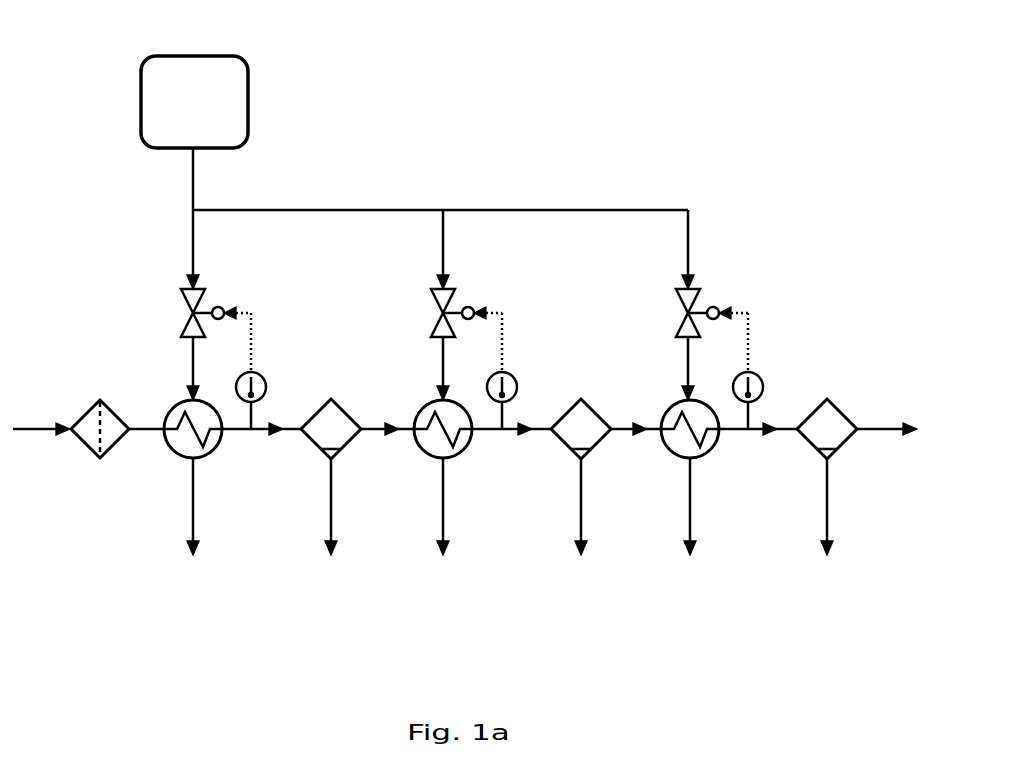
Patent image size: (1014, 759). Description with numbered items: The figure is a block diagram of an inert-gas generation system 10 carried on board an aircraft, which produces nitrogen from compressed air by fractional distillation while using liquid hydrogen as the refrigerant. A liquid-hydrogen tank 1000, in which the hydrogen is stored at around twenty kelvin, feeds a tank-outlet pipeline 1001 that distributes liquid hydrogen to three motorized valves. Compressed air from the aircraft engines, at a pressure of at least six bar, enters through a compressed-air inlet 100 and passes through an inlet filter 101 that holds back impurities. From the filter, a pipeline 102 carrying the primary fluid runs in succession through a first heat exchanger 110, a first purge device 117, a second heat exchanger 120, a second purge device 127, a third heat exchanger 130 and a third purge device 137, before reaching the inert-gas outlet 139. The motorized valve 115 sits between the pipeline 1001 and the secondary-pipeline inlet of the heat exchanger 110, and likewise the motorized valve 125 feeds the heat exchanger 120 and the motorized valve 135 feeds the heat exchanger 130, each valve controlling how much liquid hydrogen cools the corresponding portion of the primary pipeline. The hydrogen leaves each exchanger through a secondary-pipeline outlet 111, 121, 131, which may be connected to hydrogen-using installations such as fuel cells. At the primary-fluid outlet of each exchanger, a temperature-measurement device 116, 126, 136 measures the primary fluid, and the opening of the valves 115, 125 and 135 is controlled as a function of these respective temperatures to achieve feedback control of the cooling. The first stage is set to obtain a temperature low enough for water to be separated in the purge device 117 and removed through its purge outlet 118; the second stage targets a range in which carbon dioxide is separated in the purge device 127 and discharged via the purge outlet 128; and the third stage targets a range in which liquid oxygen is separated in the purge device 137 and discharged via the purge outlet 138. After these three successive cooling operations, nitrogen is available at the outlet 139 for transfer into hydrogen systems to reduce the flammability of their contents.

The inert-gas generation system 10 is at (463, 52).
The liquid-hydrogen tank 1000 is at (242, 107).
The tank-outlet pipeline 1001 is at (515, 210).
The compressed-air inlet 100 is at (45, 422).
The inlet filter 101 is at (85, 447).
The pipeline 102 is at (145, 422).
The first heat exchanger 110 is at (198, 453).
The secondary-pipeline outlet 111 is at (193, 492).
The motorized valve 115 is at (200, 290).
The temperature-measurement device 116 is at (267, 387).
The first purge device 117 is at (320, 440).
The purge outlet 118 is at (331, 510).
The second heat exchanger 120 is at (448, 455).
The secondary-pipeline outlet 121 is at (443, 492).
The motorized valve 125 is at (450, 293).
The temperature-measurement device 126 is at (518, 390).
The second purge device 127 is at (570, 440).
The purge outlet 128 is at (581, 510).
The third heat exchanger 130 is at (695, 455).
The secondary-pipeline outlet 131 is at (690, 492).
The motorized valve 135 is at (697, 293).
The temperature-measurement device 136 is at (763, 390).
The third purge device 137 is at (816, 440).
The purge outlet 138 is at (827, 510).
The inert-gas outlet 139 is at (882, 427).